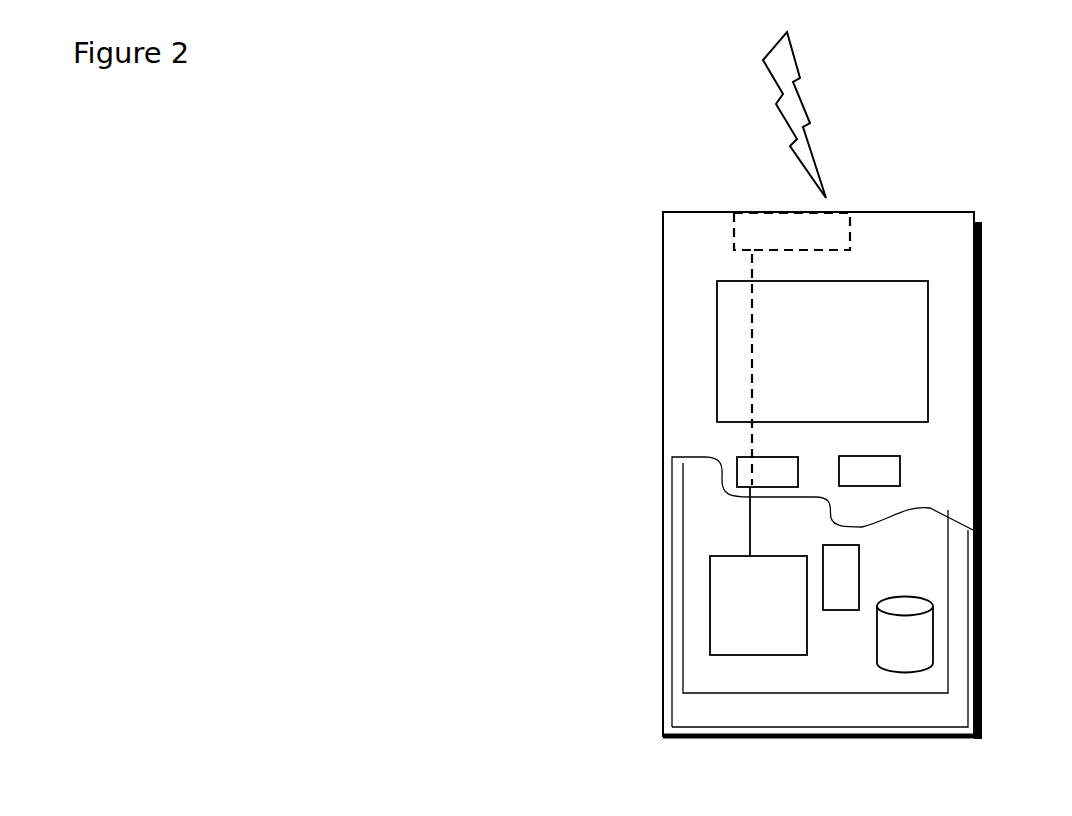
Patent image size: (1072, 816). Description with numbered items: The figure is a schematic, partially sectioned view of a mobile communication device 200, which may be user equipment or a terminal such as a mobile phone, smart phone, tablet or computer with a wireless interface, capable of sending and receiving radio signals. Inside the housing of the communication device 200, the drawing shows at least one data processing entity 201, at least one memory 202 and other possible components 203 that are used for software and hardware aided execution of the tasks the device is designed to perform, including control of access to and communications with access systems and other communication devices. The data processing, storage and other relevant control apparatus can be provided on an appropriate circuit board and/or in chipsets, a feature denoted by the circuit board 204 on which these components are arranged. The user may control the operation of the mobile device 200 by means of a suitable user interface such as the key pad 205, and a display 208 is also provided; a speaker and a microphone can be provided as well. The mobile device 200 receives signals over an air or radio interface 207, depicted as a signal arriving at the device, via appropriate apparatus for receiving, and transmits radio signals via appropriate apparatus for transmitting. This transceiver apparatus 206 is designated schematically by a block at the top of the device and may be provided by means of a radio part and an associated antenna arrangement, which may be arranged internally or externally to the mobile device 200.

The communication device 200 is at (663, 255).
The data processing entity 201 is at (717, 588).
The memory 202 is at (897, 647).
The other possible components 203 is at (841, 560).
The circuit board 204 is at (708, 673).
The key pad 205 is at (740, 472).
The transceiver apparatus 206 is at (840, 227).
The air or radio interface 207 is at (830, 134).
The display 208 is at (733, 337).